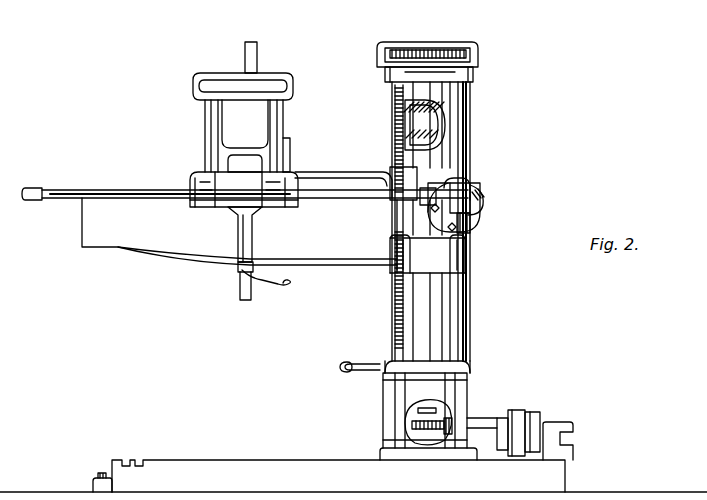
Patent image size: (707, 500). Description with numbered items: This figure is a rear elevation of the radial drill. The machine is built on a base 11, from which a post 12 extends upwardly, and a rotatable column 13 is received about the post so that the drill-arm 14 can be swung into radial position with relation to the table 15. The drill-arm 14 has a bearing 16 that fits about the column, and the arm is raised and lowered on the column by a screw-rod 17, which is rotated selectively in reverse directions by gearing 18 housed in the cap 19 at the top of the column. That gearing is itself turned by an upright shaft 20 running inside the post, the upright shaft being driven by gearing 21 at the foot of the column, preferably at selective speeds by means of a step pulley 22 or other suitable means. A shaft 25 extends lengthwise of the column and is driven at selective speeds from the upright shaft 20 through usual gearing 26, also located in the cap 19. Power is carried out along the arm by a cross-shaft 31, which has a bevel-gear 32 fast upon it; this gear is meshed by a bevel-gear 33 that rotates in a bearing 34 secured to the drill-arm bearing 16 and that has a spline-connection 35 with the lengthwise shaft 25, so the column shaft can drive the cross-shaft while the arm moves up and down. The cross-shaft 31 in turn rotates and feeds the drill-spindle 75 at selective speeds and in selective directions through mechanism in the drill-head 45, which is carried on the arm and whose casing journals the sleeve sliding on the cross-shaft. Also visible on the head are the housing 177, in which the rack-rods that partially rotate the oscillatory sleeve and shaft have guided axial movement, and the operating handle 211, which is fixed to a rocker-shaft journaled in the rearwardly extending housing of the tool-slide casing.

The base 11 is at (385, 447).
The post 12 is at (392, 124).
The column 13 is at (455, 171).
The drill-arm 14 is at (329, 268).
The table 15 is at (242, 458).
The bearing 16 is at (456, 263).
The screw-rod 17 is at (392, 306).
The gearing 18 is at (420, 55).
The cap 19 is at (478, 77).
The upright shaft 20 is at (395, 140).
The gearing 21 is at (455, 416).
The step pulley 22 is at (522, 411).
The shaft 25 is at (470, 121).
The gearing 26 is at (455, 51).
The cross-shaft 31 is at (348, 198).
The bevel-gear 32 is at (470, 192).
The bevel-gear 33 is at (485, 206).
The bearing 34 is at (471, 225).
The spline-connection 35 is at (480, 200).
The drill-head 45 is at (204, 124).
The drill-spindle 75 is at (238, 296).
The housing 177 is at (298, 152).
The operating handle 211 is at (286, 288).